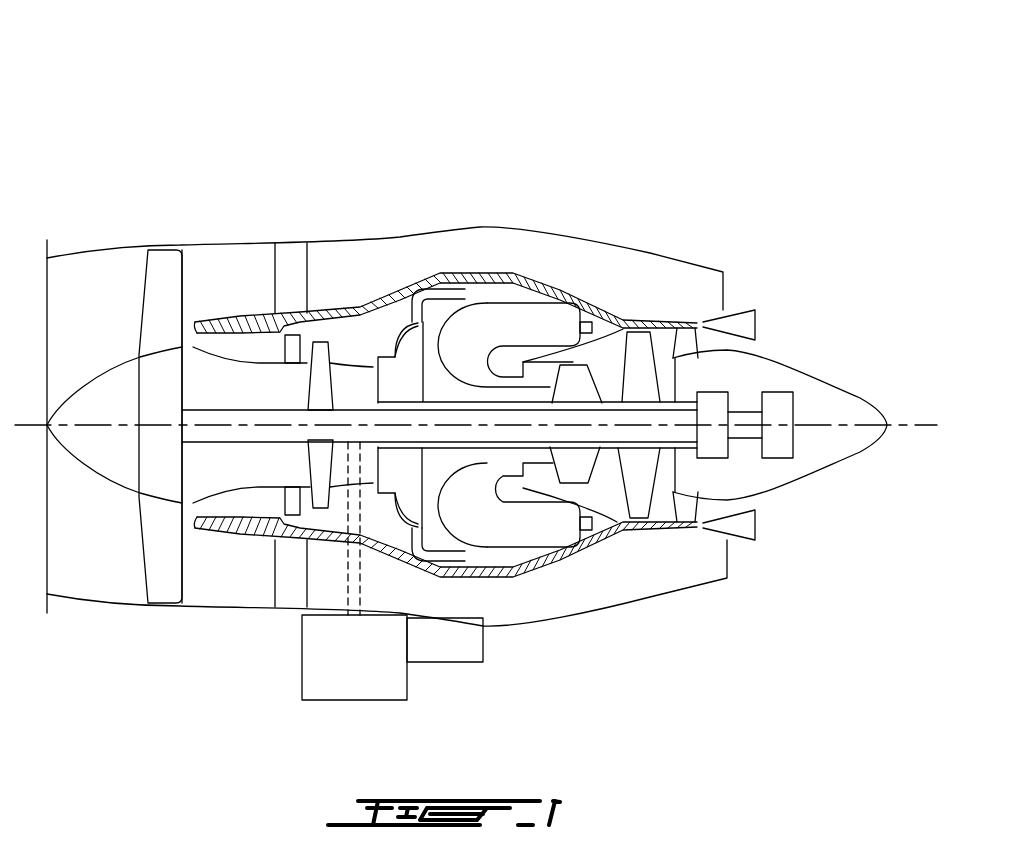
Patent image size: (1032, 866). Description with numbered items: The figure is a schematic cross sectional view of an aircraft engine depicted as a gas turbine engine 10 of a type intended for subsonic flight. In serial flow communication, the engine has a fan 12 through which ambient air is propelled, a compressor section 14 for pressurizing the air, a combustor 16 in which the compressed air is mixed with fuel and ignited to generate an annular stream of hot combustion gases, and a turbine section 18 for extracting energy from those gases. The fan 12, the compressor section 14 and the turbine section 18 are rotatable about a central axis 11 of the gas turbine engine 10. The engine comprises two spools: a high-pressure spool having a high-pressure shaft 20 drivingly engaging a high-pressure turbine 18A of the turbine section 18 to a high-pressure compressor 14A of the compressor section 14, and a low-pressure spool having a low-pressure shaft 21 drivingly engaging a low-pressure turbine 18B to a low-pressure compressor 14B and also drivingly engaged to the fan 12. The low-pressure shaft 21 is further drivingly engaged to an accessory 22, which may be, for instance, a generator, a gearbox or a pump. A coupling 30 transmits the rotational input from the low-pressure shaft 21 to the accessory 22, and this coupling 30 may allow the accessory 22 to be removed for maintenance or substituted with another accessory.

The gas turbine engine 10 is at (648, 138).
The central axis 11 is at (918, 423).
The fan 12 is at (158, 541).
The compressor section 14 is at (347, 348).
The high-pressure compressor 14A is at (402, 488).
The low-pressure compressor 14B is at (320, 469).
The combustor 16 is at (510, 320).
The turbine section 18 is at (607, 473).
The high-pressure turbine 18A is at (578, 380).
The low-pressure turbine 18B is at (640, 360).
The high-pressure shaft 20 is at (462, 553).
The low-pressure shaft 21 is at (230, 410).
The accessory 22 is at (773, 393).
The coupling 30 is at (710, 392).